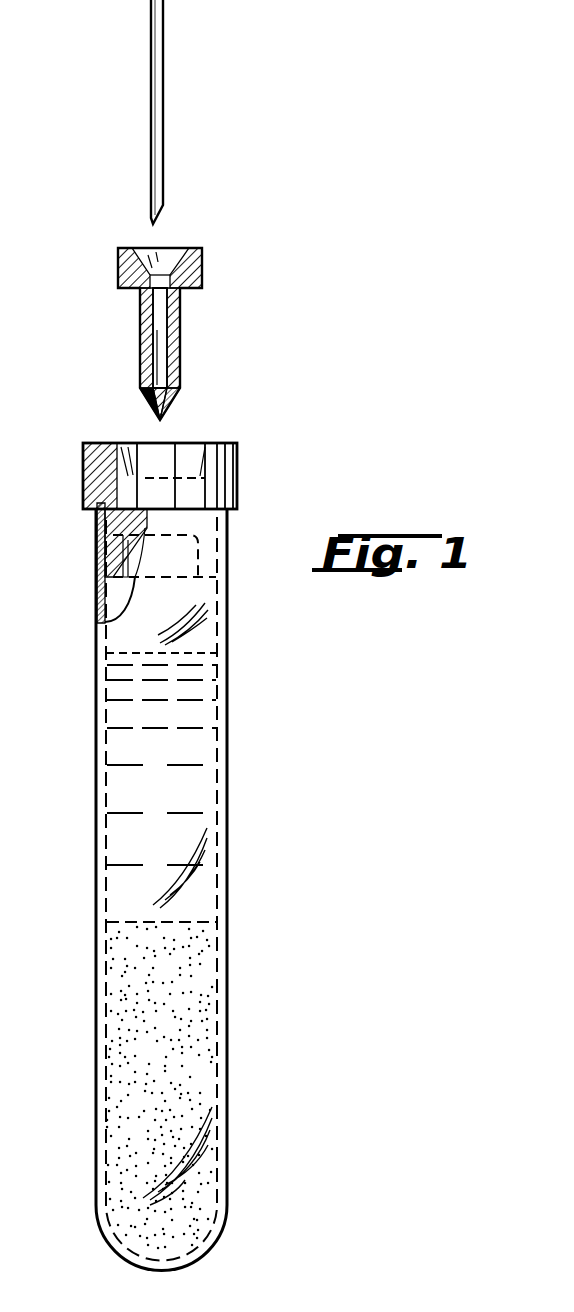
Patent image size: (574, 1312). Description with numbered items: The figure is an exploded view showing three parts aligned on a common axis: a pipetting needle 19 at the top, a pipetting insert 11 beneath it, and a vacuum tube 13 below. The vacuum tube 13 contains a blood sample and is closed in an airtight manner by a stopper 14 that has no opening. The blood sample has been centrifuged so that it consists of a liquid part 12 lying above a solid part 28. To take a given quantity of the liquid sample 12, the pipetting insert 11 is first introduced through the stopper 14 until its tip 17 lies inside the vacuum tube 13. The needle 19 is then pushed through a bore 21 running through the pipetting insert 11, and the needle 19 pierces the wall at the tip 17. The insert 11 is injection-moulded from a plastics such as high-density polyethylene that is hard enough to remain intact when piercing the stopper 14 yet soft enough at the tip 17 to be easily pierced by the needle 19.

The pipetting insert 11 is at (118, 338).
The liquid part 12 is at (198, 755).
The vacuum tube 13 is at (213, 631).
The stopper 14 is at (213, 483).
The tip 17 is at (166, 413).
The pipetting needle 19 is at (163, 100).
The bore 21 is at (160, 328).
The solid part 28 is at (183, 1028).